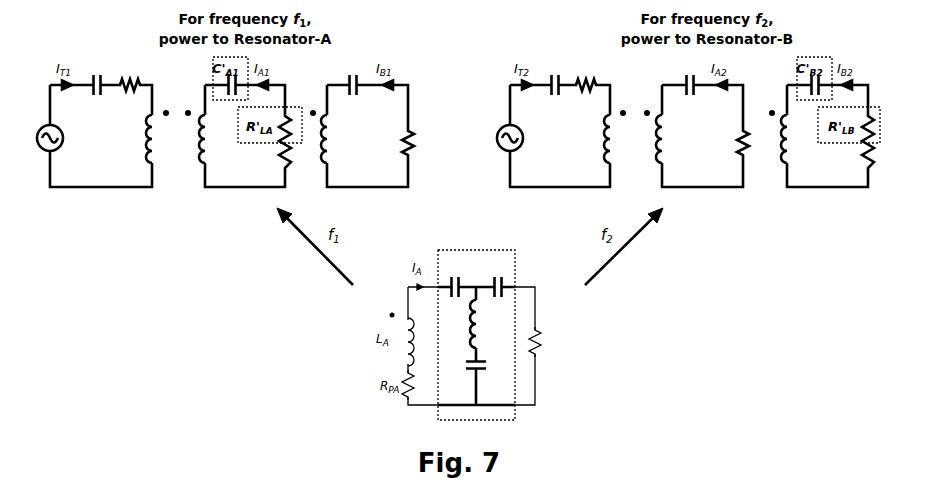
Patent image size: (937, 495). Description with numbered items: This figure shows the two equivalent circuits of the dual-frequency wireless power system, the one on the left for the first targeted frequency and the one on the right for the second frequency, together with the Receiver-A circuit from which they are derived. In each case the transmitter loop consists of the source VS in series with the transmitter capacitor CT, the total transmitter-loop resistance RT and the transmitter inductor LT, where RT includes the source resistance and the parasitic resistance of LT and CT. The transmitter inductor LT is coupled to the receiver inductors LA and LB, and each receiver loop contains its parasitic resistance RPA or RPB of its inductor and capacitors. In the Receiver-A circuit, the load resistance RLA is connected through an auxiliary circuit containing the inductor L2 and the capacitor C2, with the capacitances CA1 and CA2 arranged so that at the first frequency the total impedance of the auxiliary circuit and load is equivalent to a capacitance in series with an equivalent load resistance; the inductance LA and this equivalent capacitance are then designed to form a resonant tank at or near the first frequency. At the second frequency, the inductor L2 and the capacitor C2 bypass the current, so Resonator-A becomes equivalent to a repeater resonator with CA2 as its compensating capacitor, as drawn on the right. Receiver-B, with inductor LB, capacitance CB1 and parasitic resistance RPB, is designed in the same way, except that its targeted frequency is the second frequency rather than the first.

The source VS is at (272, 138).
The transmitter capacitor CT is at (325, 78).
The total resistance in the transmitter loop RT is at (358, 76).
The transmitter inductor LT is at (368, 139).
The inductance of Receiver-A LA is at (441, 139).
The inductance of Receiver-B LB is at (564, 139).
The parasitic resistance of Receiver-A RPA is at (497, 142).
The parasitic resistance of Receiver-B RPB is at (623, 142).
The capacitance of Receiver-B CB1 is at (354, 78).
The capacitance CA1 is at (500, 276).
The compensating capacitor CA2 is at (573, 179).
The inductor L2 is at (462, 324).
The capacitor C2 is at (467, 367).
The load resistance of Receiver-A RLA is at (547, 342).